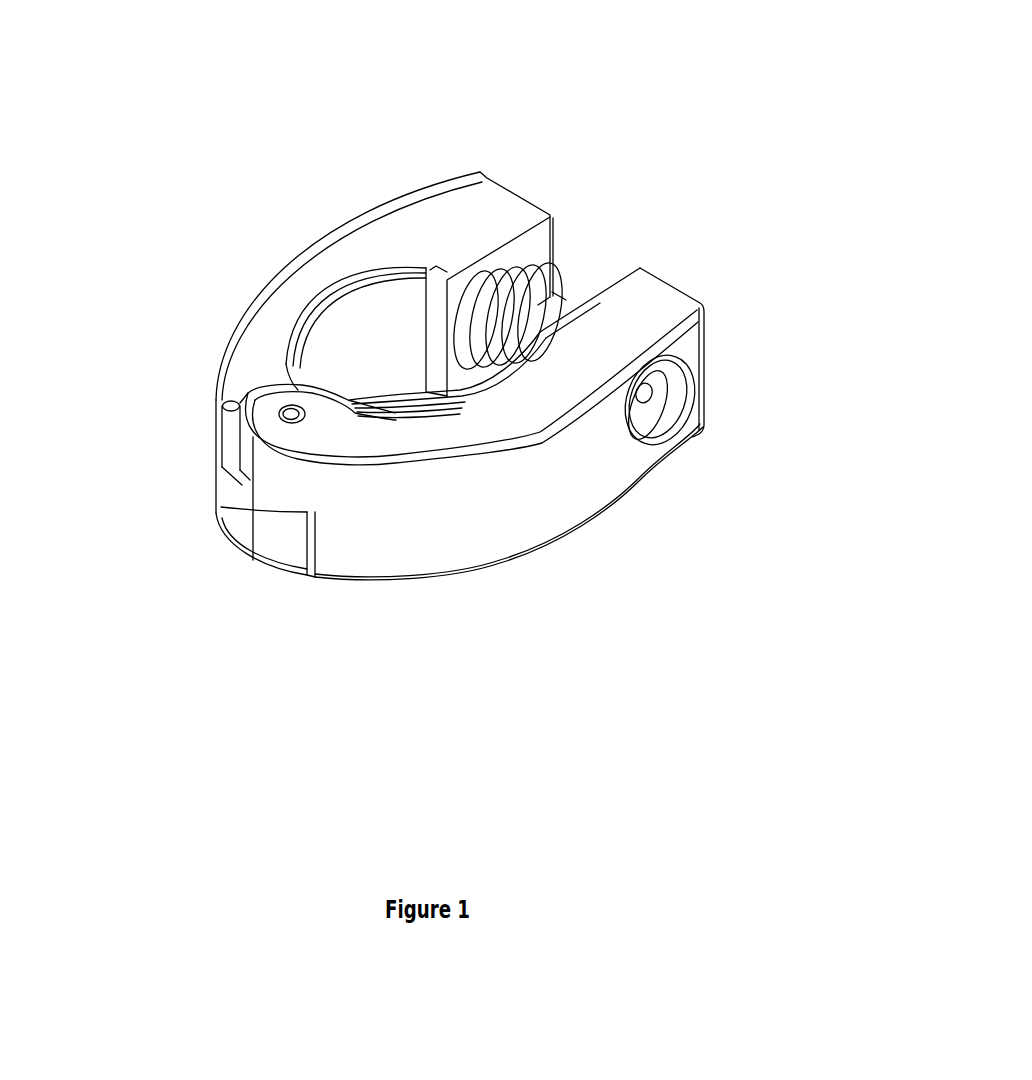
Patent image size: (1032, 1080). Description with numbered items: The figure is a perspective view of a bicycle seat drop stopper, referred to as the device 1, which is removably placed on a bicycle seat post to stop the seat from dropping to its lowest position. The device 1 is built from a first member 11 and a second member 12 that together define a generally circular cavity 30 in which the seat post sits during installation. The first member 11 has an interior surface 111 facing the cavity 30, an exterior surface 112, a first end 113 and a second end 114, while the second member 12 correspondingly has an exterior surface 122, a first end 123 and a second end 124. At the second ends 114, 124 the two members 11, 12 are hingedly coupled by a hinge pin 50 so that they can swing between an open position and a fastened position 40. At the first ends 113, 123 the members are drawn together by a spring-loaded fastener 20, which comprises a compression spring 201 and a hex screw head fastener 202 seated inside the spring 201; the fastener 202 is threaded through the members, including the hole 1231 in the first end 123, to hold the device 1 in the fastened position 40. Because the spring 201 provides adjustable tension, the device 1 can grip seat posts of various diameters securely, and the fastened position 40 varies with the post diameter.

The device 1 is at (752, 108).
The first member 11 is at (213, 303).
The second member 12 is at (567, 582).
The spring-loaded fastener 20 is at (583, 271).
The circular cavity 30 is at (413, 360).
The fastened position 40 is at (826, 245).
The hinge pin 50 is at (288, 405).
The interior surface 111 is at (343, 342).
The exterior surface 112 is at (203, 420).
The first end 113 is at (500, 172).
The second end 114 is at (193, 510).
The exterior surface 122 is at (424, 534).
The first end 123 is at (694, 283).
The second end 124 is at (278, 488).
The compression spring 201 is at (564, 270).
The hex screw head fastener 202 is at (661, 398).
The hole 1231 is at (641, 447).